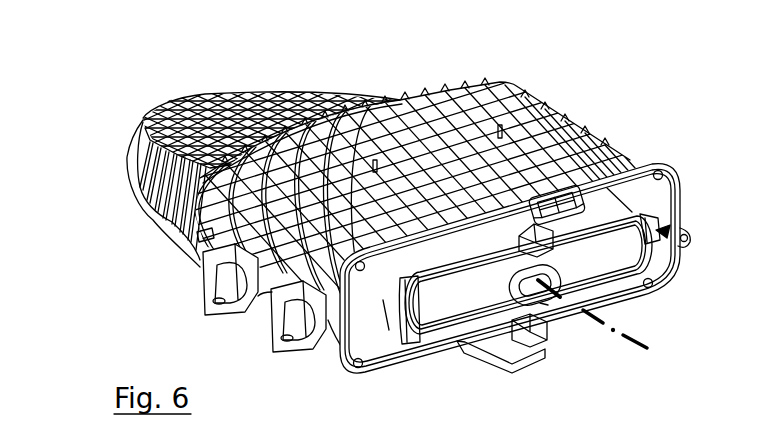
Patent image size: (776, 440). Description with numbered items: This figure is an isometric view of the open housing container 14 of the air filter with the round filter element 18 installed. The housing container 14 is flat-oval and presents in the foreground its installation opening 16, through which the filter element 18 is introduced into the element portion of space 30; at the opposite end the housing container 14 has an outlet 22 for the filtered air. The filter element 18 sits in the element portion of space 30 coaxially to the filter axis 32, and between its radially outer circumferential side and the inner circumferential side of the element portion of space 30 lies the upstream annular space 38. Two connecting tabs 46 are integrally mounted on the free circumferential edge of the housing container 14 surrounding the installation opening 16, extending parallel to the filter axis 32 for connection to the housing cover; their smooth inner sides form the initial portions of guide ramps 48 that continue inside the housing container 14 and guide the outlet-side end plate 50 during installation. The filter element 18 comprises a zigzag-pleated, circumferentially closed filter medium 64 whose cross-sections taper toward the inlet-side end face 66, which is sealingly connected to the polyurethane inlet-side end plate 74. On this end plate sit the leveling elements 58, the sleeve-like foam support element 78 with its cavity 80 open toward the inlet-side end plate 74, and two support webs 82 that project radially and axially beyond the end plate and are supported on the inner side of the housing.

The housing container 14 is at (333, 104).
The installation opening 16 is at (343, 360).
The filter element 18 is at (668, 232).
The outlet 22 is at (133, 130).
The element portion of space 30 is at (363, 303).
The filter axis 32 is at (650, 349).
The upstream annular space 38 is at (627, 195).
The connecting tabs 46 is at (562, 205).
The guide ramp 48 is at (533, 327).
The outlet-side end plate 50 is at (545, 304).
The leveling elements 58 is at (517, 240).
The filter medium 64 is at (385, 317).
The inlet-side end face 66 is at (650, 282).
The inlet-side end plate 74 is at (605, 280).
The support element 78 is at (517, 284).
The cavity 80 is at (545, 298).
The support webs 82 is at (653, 224).